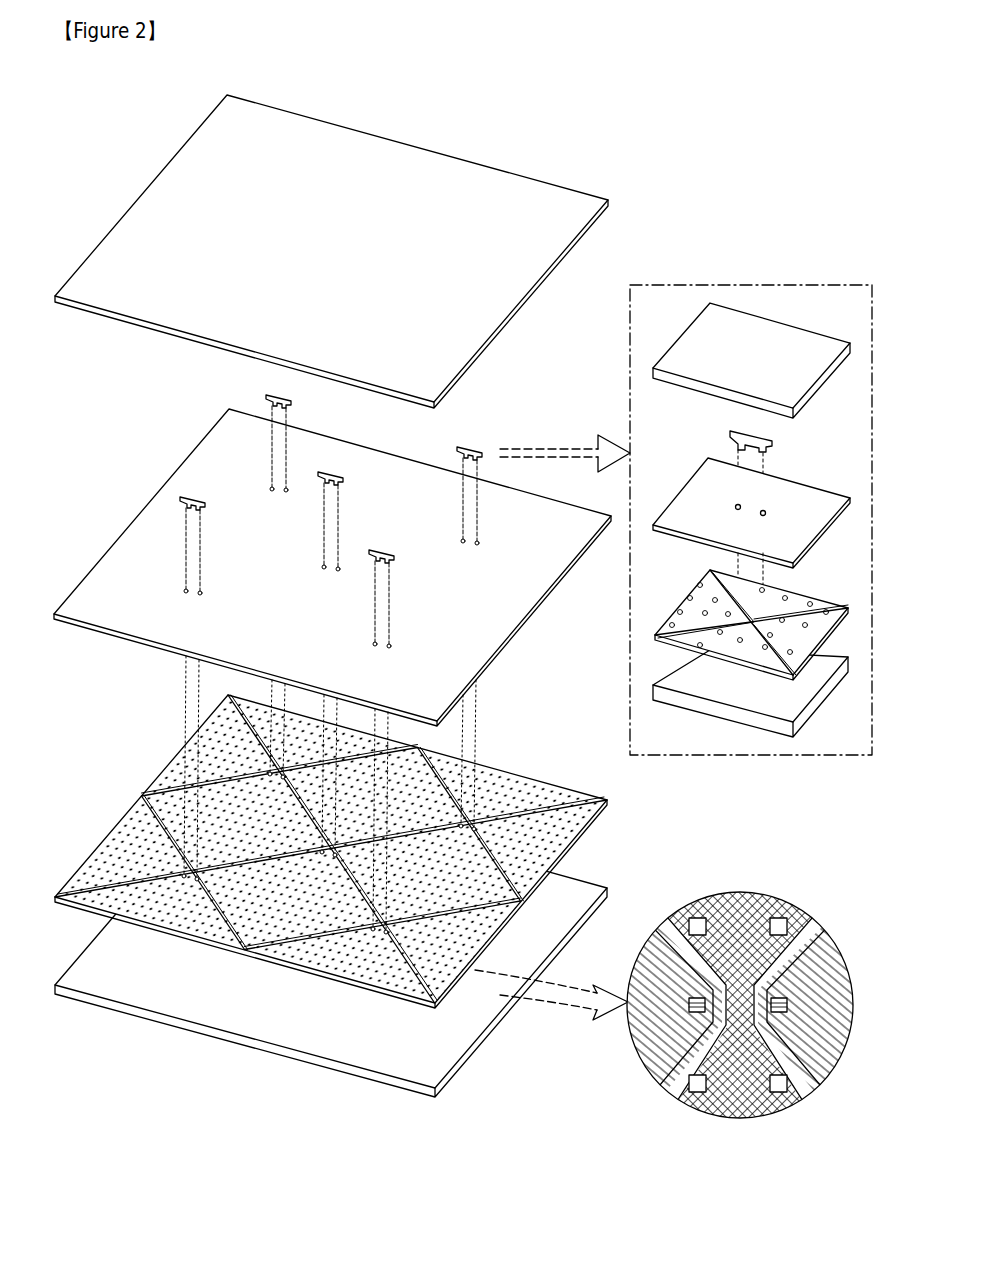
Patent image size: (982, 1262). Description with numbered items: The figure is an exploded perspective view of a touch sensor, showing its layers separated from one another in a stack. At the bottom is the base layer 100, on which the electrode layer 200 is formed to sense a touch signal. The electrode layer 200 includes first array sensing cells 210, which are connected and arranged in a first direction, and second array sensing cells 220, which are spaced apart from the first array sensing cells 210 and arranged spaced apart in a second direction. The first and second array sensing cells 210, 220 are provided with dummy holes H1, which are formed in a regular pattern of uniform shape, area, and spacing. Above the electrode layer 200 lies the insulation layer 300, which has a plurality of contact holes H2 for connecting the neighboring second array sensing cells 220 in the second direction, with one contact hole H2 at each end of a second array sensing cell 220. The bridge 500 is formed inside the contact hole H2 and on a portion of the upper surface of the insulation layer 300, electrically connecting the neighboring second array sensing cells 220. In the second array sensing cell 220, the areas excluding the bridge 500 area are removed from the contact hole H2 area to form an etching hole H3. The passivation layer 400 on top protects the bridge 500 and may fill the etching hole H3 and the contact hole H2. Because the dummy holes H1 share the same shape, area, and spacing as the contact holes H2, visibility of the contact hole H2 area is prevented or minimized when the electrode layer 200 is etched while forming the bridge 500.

The base layer 100 is at (447, 1057).
The electrode layer 200 is at (396, 851).
The first array sensing cells 210 is at (579, 796).
The second array sensing cells 220 is at (578, 846).
The insulation layer 300 is at (487, 622).
The passivation layer 400 is at (402, 156).
The bridge 500 is at (469, 448).
The dummy holes H1 is at (482, 826).
The contact holes H2 is at (478, 540).
The etching hole H3 is at (700, 1014).